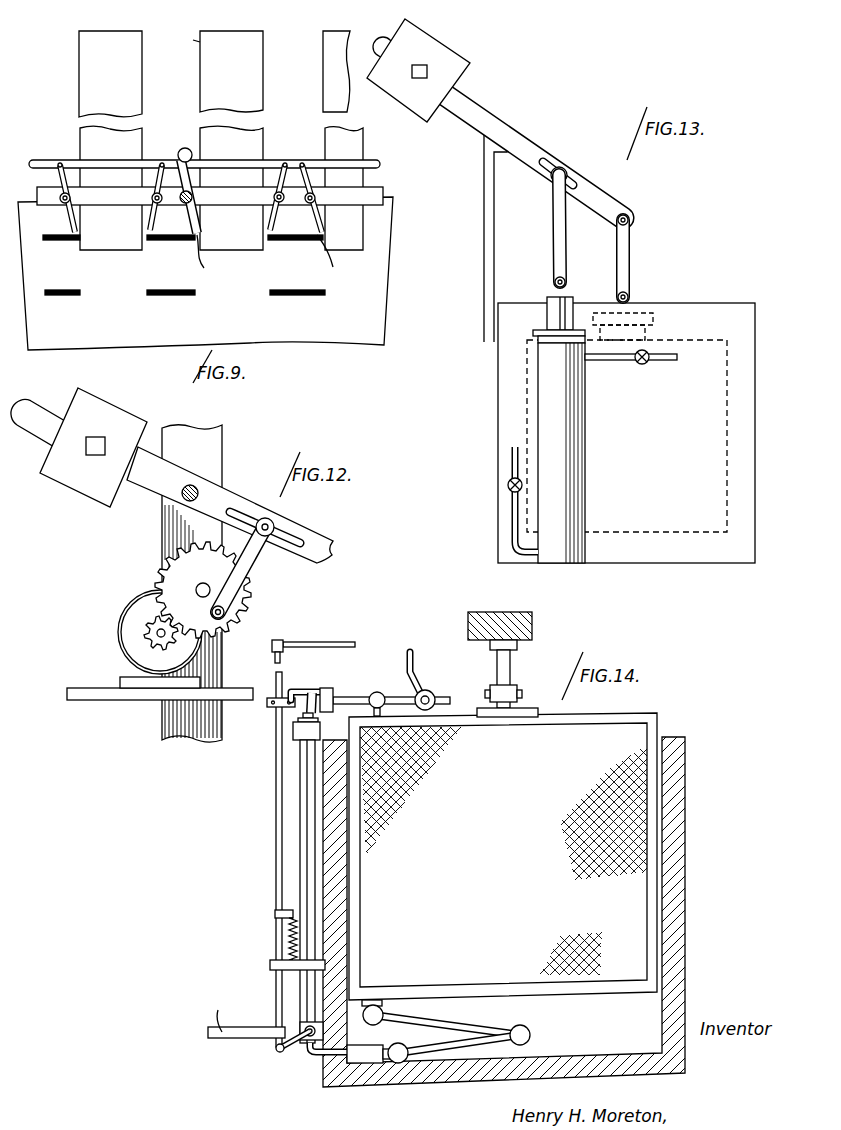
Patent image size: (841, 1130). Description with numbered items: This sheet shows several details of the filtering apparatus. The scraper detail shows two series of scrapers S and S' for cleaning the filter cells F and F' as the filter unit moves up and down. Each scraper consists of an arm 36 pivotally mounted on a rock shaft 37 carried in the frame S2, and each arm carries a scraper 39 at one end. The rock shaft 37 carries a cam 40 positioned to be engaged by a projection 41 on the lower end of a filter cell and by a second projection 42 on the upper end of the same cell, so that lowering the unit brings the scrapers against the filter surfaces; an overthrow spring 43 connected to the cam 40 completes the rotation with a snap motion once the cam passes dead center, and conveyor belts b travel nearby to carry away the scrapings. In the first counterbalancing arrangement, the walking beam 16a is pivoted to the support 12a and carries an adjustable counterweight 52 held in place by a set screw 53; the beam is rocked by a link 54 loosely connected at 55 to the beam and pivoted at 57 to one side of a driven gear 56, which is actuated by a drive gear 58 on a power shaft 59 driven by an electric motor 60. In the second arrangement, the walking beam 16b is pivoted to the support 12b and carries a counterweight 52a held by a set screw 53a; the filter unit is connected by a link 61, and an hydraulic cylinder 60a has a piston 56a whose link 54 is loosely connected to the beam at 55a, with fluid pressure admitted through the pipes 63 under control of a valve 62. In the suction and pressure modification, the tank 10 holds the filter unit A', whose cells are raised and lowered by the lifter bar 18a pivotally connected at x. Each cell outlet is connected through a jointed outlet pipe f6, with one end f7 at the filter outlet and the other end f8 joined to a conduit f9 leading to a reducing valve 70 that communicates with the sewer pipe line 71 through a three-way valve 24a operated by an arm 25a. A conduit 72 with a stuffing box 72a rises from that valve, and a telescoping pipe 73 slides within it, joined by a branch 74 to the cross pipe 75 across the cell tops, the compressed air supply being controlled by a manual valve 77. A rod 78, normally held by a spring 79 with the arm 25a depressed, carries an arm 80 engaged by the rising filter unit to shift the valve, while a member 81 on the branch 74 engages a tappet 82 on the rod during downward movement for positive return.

In FIG. 9, the second projection 42 is at (200, 45).
In FIG. 9, the filter cells F is at (130, 140).
In FIG. 14, the filter cells F is at (503, 851).
In FIG. 9, the filter cells F' is at (317, 140).
In FIG. 13, the filter cells F' is at (640, 430).
In FIG. 9, the overthrow spring 43 is at (183, 167).
In FIG. 9, the arm 36 is at (284, 176).
In FIG. 9, the cam 40 is at (192, 176).
In FIG. 9, the rock shaft 37 is at (73, 197).
In FIG. 9, the frame S2 is at (383, 190).
In FIG. 9, the series of scrapers S' is at (49, 222).
In FIG. 9, the series of scrapers S is at (205, 273).
In FIG. 9, the projection 41 is at (202, 230).
In FIG. 9, the scraper 39 is at (79, 240).
In FIG. 9, the conveyor belts b is at (50, 287).
In FIG. 12, the adjustable counterweight 52 is at (70, 477).
In FIG. 12, the set screw 53 is at (98, 437).
In FIG. 12, the walking beam 16a is at (148, 477).
In FIG. 12, the support 12a is at (173, 533).
In FIG. 12, the driven gear 56 is at (182, 570).
In FIG. 12, the drive gear 58 is at (147, 627).
In FIG. 12, the power shaft 59 is at (147, 637).
In FIG. 12, the electric motor 60 is at (157, 667).
In FIG. 12, the loose connection 55 is at (278, 518).
In FIG. 12, the link 54 is at (257, 563).
In FIG. 13, the link 54 is at (553, 248).
In FIG. 12, the pivot 57 is at (233, 608).
In FIG. 13, the counterweight 52a is at (456, 73).
In FIG. 13, the set screw 53a is at (421, 79).
In FIG. 13, the loose connection 55a is at (560, 167).
In FIG. 13, the walking beam 16b is at (590, 193).
In FIG. 13, the support 12b is at (490, 243).
In FIG. 13, the link 61 is at (633, 267).
In FIG. 13, the piston 56a is at (550, 313).
In FIG. 13, the hydraulic cylinder 60a is at (582, 443).
In FIG. 13, the pipes 63 is at (612, 360).
In FIG. 13, the valve 62 is at (643, 364).
In FIG. 14, the lifter bar 18a is at (535, 627).
In FIG. 14, the pivotal connection x is at (513, 690).
In FIG. 14, the branch 74 is at (348, 696).
In FIG. 14, the cross pipe 75 is at (378, 691).
In FIG. 14, the manual valve 77 is at (430, 690).
In FIG. 14, the arm 80 is at (322, 641).
In FIG. 14, the rod 78 is at (276, 882).
In FIG. 14, the tappet 82 is at (268, 708).
In FIG. 14, the member 81 is at (291, 690).
In FIG. 14, the telescoping pipe 73 is at (315, 700).
In FIG. 14, the stuffing box 72a is at (293, 735).
In FIG. 14, the conduit 72 is at (308, 857).
In FIG. 14, the spring 79 is at (289, 937).
In FIG. 14, the three-way valve 24a is at (306, 1056).
In FIG. 14, the reducing valve 70 is at (367, 1063).
In FIG. 14, the jointed outlet pipe f6 is at (455, 1015).
In FIG. 14, the outlet pipe end f7 is at (385, 1005).
In FIG. 14, the outlet pipe end f8 is at (530, 1034).
In FIG. 14, the conduit f9 is at (455, 1050).
In FIG. 14, the arm 25a is at (283, 1045).
In FIG. 14, the sewer pipe line 71 is at (238, 1020).
In FIG. 14, the tank 10 is at (677, 852).
In FIG. 14, the filter unit A' is at (527, 850).